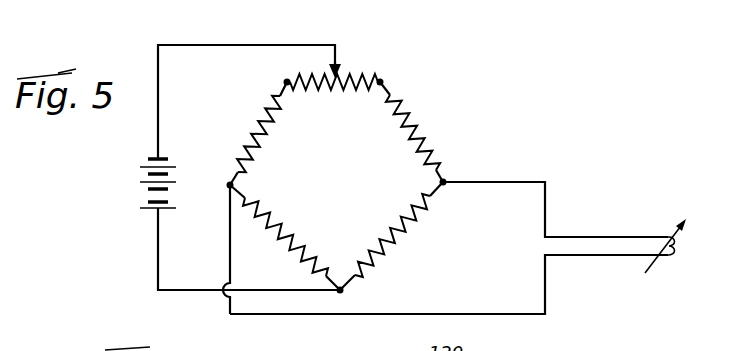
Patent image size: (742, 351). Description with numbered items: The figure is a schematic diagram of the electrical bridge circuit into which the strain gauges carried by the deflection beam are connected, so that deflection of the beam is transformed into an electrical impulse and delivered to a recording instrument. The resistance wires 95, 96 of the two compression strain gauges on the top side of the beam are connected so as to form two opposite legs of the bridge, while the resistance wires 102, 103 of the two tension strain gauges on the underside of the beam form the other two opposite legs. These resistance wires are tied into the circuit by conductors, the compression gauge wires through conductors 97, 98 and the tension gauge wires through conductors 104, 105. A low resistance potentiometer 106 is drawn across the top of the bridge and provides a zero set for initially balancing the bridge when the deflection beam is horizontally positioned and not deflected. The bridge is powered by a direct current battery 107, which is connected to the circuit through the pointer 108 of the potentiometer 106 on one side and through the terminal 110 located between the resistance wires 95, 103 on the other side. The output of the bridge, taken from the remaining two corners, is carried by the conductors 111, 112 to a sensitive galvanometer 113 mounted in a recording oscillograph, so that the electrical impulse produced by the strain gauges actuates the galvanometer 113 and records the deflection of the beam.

The resistance wire 95 is at (270, 213).
The resistance wire 96 is at (410, 118).
The conductor 97 is at (243, 195).
The conductor 98 is at (387, 90).
The resistance wire 102 is at (265, 110).
The resistance wire 103 is at (425, 225).
The conductor 104 is at (233, 172).
The conductor 105 is at (350, 283).
The low resistance potentiometer 106 is at (365, 73).
The direct current battery 107 is at (146, 189).
The pointer 108 is at (340, 60).
The terminal 110 is at (336, 278).
The conductor 111 is at (533, 174).
The conductor 112 is at (492, 309).
The sensitive galvanometer 113 is at (682, 246).